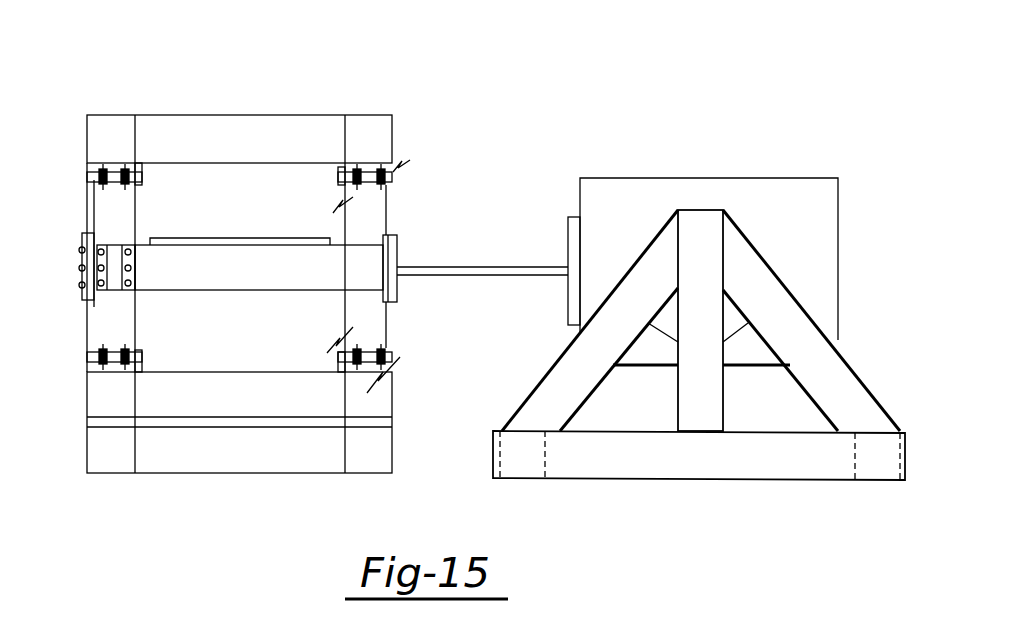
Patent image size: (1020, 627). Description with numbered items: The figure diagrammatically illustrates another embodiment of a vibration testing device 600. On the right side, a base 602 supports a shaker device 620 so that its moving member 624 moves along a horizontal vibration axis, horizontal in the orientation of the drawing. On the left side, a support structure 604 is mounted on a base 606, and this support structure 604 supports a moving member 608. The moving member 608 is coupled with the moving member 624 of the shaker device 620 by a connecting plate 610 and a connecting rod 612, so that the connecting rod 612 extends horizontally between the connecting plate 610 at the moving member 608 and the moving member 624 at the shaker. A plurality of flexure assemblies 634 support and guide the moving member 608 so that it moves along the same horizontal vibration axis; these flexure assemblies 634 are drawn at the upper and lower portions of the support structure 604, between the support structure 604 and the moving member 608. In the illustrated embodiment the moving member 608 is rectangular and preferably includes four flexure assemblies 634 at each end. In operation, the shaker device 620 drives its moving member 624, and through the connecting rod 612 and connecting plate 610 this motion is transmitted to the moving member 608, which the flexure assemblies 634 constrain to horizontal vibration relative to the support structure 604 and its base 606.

The vibration testing device 600 is at (558, 138).
The base 602 is at (832, 377).
The support structure 604 is at (222, 110).
The base 606 is at (193, 452).
The moving member 608 is at (240, 250).
The connecting plate 610 is at (396, 266).
The connecting rod 612 is at (517, 266).
The shaker device 620 is at (773, 208).
The moving member 624 is at (568, 316).
The flexure assemblies 634 is at (78, 204).